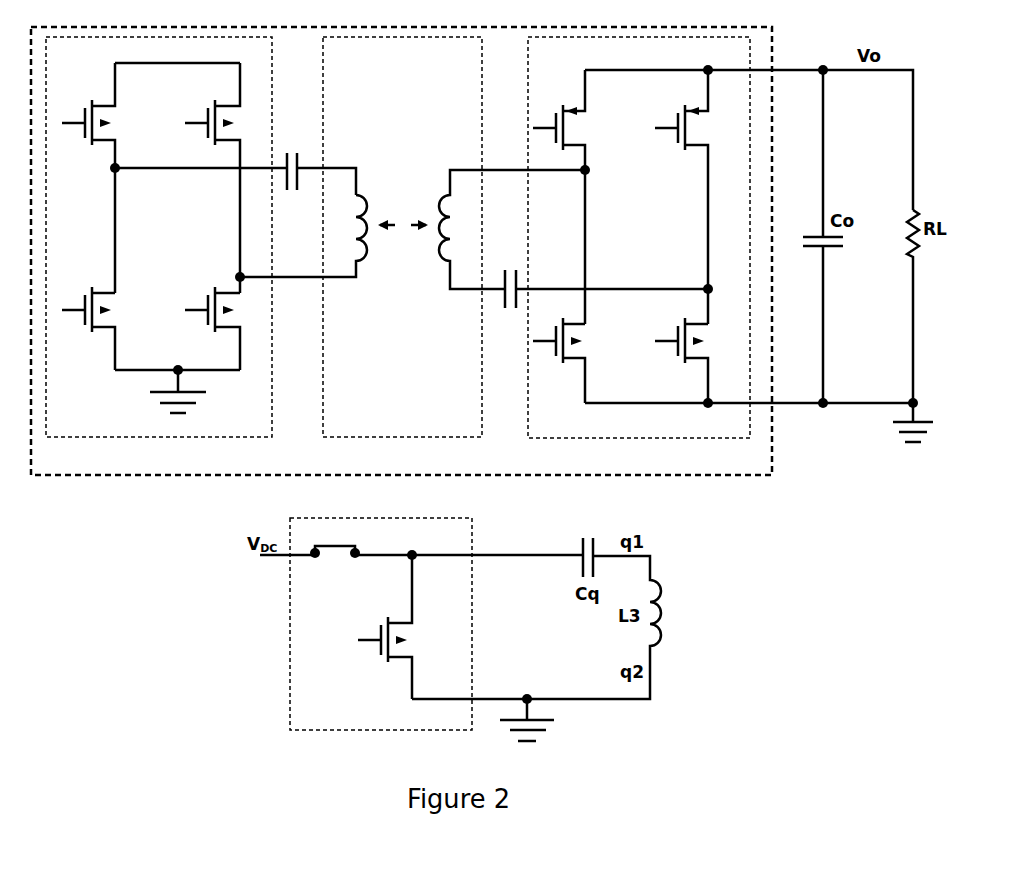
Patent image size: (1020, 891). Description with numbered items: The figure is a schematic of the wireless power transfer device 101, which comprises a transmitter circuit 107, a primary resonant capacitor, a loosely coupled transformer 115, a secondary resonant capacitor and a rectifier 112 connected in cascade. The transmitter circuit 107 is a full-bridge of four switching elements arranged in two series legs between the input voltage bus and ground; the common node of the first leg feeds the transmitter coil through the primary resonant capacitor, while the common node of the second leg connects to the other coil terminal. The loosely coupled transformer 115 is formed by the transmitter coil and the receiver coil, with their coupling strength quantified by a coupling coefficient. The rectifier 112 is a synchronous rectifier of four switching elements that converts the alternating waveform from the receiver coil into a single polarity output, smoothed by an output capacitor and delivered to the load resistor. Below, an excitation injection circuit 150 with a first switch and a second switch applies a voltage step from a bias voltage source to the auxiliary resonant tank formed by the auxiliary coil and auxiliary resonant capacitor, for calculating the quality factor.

The wireless power transfer device 101 is at (414, 467).
The transmitter circuit 107 is at (92, 422).
The loosely coupled transformer 115 is at (415, 422).
The rectifier 112 is at (572, 429).
The excitation injection circuit 150 is at (339, 722).